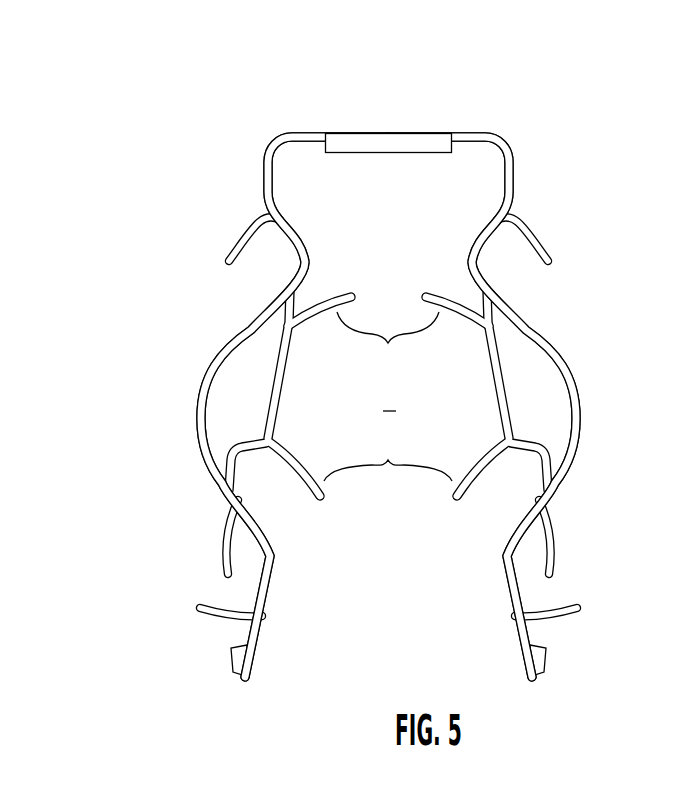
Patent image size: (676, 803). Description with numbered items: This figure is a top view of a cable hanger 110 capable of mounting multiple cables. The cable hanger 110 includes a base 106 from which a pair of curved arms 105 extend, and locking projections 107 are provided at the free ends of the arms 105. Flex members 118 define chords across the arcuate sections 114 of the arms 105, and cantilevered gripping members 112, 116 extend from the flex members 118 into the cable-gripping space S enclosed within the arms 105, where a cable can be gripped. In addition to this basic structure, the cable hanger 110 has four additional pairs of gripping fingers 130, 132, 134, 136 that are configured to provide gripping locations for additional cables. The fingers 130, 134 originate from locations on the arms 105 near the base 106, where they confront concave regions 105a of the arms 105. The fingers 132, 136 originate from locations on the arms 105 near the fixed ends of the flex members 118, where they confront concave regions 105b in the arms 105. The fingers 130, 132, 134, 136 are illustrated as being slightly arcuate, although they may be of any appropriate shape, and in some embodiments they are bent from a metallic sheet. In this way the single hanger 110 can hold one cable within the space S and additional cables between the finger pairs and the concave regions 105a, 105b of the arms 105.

The cable hanger 110 is at (364, 344).
The base 106 is at (463, 134).
The curved arms 105 is at (196, 420).
The concave regions 105a is at (297, 264).
The concave regions 105b is at (265, 554).
The gripping fingers 130 is at (243, 224).
The gripping fingers 134 is at (534, 223).
The gripping fingers 132 is at (218, 546).
The gripping fingers 136 is at (558, 548).
The flex members 118 is at (274, 382).
The cantilevered gripping member 112 is at (388, 344).
The cantilevered gripping member 116 is at (388, 454).
The arcuate sections 114 is at (593, 439).
The locking projections 107 is at (236, 659).
The cable-gripping space S is at (389, 397).